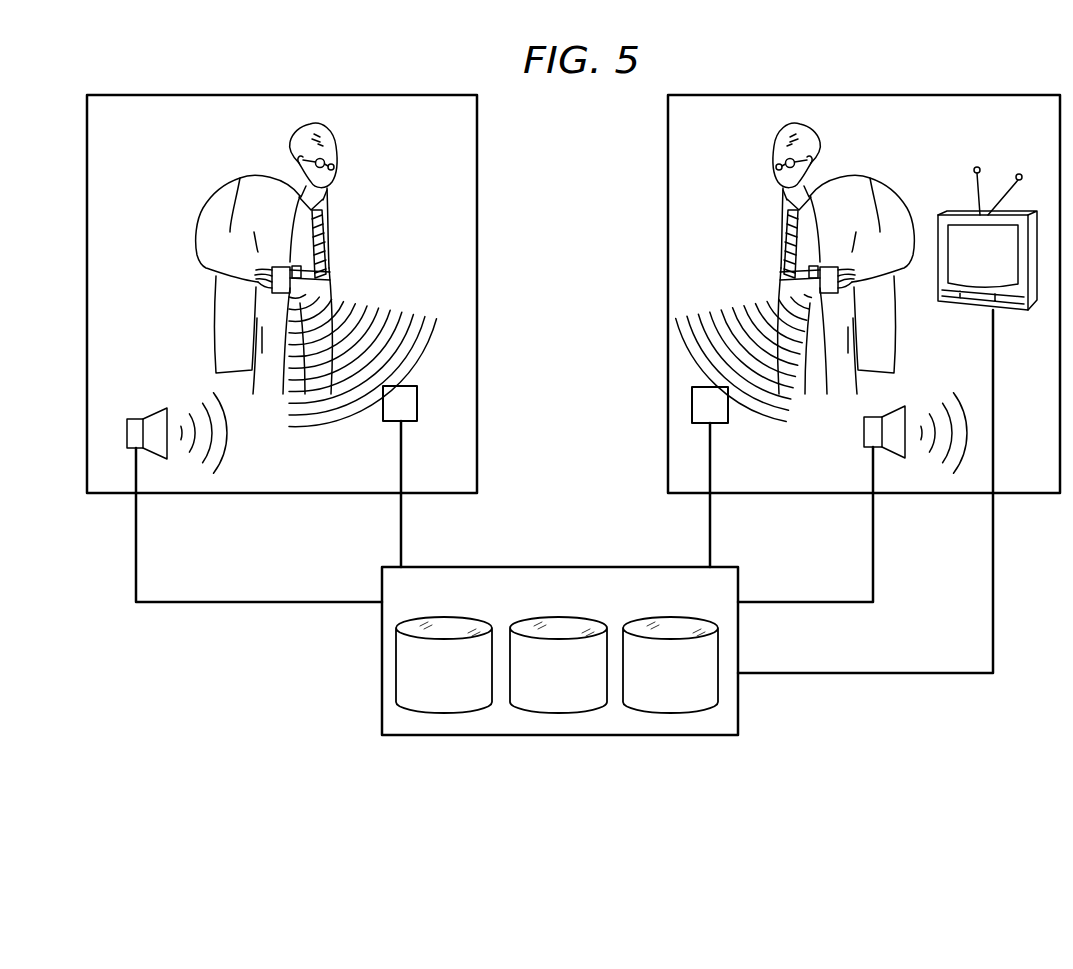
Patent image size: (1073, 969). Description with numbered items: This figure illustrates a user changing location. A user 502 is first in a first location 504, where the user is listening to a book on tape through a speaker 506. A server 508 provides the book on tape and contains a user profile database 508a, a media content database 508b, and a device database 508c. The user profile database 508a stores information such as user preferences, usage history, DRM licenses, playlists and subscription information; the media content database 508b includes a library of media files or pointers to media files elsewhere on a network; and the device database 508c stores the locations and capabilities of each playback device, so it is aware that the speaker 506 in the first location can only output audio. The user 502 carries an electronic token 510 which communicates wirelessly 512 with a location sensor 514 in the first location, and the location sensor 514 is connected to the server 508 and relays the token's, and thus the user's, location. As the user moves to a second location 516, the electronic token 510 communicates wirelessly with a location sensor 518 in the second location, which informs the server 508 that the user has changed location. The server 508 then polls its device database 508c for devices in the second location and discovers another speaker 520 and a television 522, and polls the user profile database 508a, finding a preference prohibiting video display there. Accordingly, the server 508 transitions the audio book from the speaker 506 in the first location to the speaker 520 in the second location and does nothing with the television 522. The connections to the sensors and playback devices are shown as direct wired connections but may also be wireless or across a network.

The user 502 is at (251, 175).
The location L1 504 is at (285, 94).
The speaker 506 is at (138, 418).
The server 508 is at (558, 565).
The user profile database 508a is at (438, 714).
The media content database 508b is at (555, 714).
The device database 508c is at (665, 714).
The electronic token 510 is at (293, 273).
The wireless communication 512 is at (320, 416).
The location sensor 514 is at (417, 406).
The location L2 516 is at (859, 94).
The location sensor 518 is at (692, 403).
The speaker 520 is at (863, 432).
The television 522 is at (948, 213).